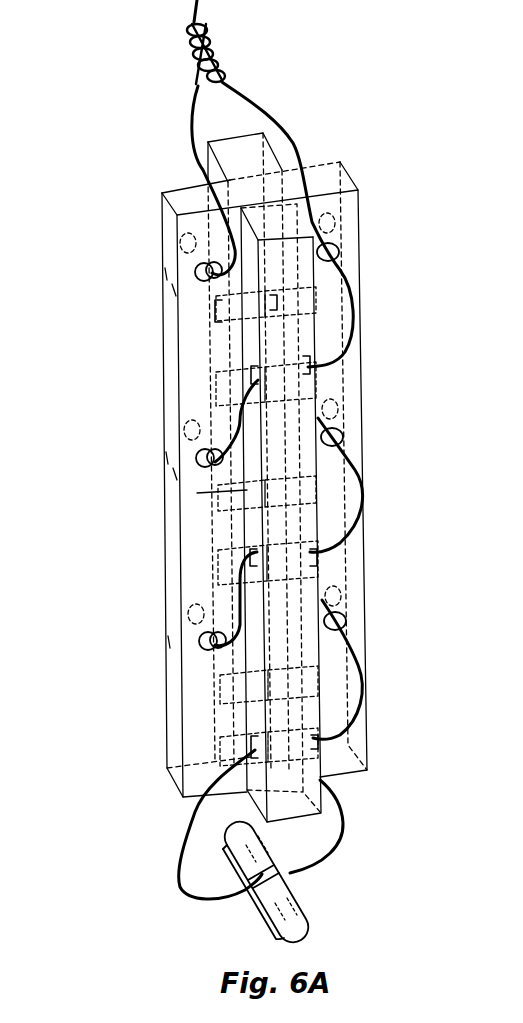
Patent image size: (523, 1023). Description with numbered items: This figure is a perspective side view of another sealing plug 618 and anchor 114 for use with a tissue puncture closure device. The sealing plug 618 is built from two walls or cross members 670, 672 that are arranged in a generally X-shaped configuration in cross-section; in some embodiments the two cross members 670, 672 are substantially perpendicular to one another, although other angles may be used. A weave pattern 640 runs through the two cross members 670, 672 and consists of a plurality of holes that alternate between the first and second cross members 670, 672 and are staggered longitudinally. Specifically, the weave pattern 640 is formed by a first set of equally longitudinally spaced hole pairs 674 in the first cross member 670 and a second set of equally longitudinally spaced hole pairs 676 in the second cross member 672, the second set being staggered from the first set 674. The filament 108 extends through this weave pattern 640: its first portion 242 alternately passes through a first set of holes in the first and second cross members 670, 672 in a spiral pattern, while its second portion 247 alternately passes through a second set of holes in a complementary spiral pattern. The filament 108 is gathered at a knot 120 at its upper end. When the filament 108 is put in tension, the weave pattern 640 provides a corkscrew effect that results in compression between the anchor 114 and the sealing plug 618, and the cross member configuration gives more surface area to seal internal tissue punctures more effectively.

The filament 108 is at (190, 118).
The anchor 114 is at (303, 903).
The knot 120 is at (217, 40).
The first portion of the filament 242 is at (347, 823).
The second portion of the filament 247 is at (176, 845).
The sealing plug 618 is at (262, 447).
The weave pattern 640 is at (327, 565).
The first cross member 670 is at (330, 173).
The second cross member 672 is at (241, 143).
The first set of hole pairs 674 is at (320, 227).
The second set of hole pairs 676 is at (250, 367).